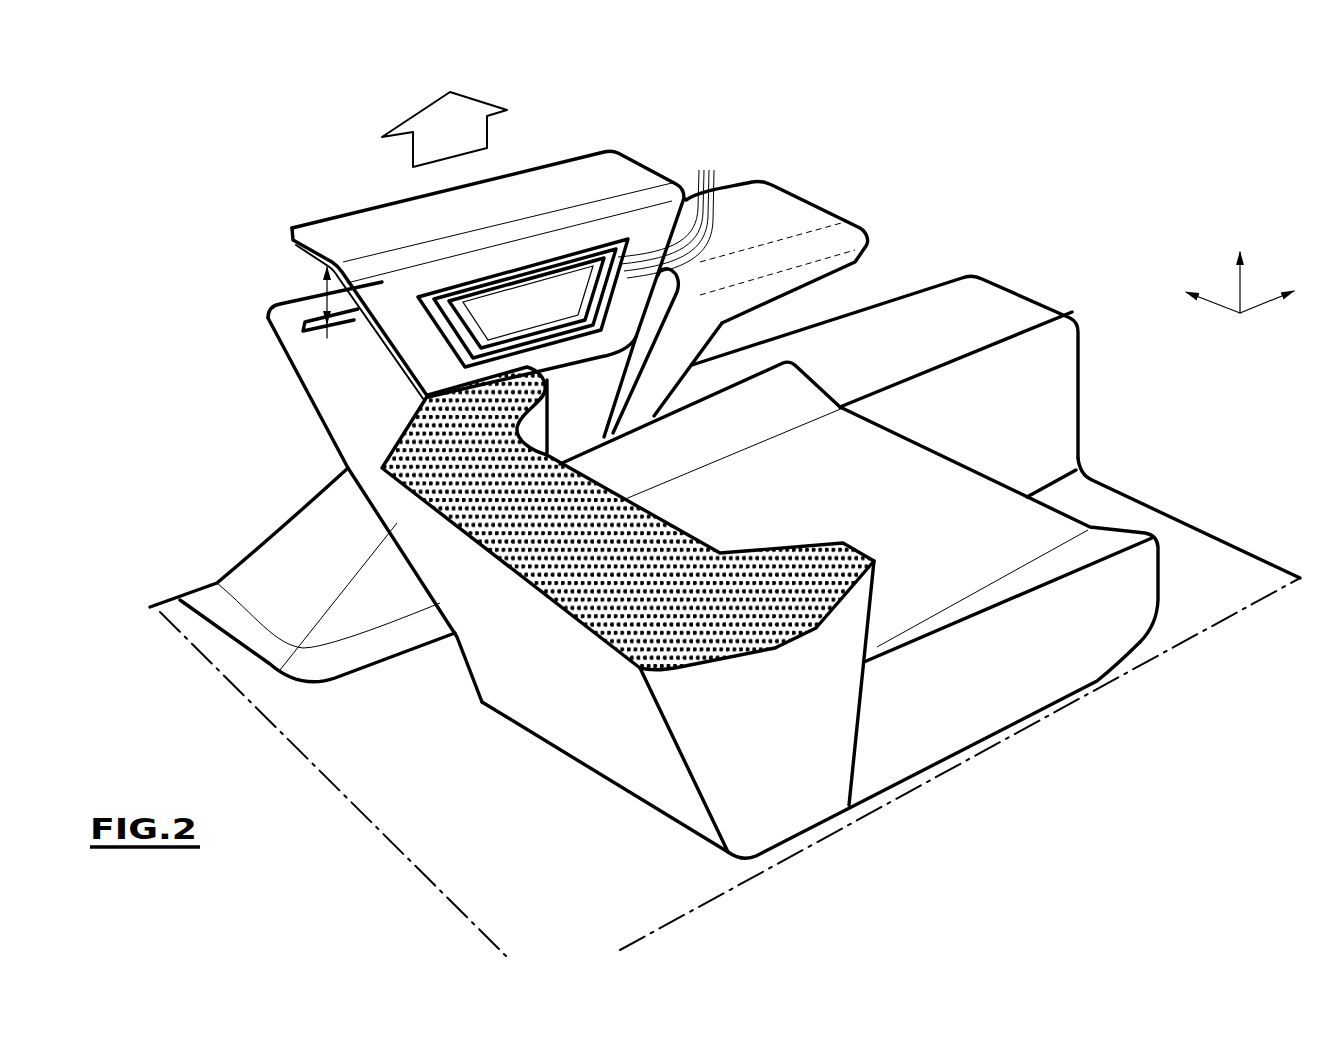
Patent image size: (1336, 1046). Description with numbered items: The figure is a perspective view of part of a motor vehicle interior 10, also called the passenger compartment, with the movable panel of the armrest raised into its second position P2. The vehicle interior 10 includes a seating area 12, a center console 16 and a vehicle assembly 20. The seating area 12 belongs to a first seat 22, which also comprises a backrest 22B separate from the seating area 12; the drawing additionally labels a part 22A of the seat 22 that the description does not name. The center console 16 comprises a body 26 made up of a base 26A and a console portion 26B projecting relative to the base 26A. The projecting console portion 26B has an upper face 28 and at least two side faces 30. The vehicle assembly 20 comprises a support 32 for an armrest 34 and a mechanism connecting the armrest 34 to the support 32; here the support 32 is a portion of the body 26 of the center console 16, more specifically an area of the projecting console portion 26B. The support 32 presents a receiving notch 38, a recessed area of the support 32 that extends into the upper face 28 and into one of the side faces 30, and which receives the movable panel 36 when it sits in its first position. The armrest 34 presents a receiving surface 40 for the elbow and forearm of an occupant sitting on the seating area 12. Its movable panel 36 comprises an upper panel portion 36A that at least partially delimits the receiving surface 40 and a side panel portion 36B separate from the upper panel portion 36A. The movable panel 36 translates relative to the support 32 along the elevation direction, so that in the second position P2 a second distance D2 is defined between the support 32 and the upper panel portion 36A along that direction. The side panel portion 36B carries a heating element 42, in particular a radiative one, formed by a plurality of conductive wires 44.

The vehicle interior 10 is at (845, 108).
The seating area 12 is at (1028, 538).
The center console 16 is at (993, 251).
The vehicle assembly 20 is at (653, 146).
The seat 22 is at (895, 822).
The first base portion 22A is at (1021, 650).
The backrest 22B is at (518, 638).
The body 26 is at (1001, 318).
The base 26A is at (902, 340).
The console portion 26B is at (789, 212).
The upper face 28 is at (297, 310).
The side faces 30 is at (687, 330).
The support 32 is at (407, 336).
The armrest 34 is at (582, 147).
The movable panel 36 is at (327, 232).
The upper panel portion 36A is at (371, 228).
The side panel portion 36B is at (365, 355).
The receiving notch 38 is at (368, 346).
The receiving surface 40 is at (510, 203).
The heating element 42 is at (570, 352).
The conductive wires 44 is at (667, 206).
The second distance D2 is at (310, 302).
The second position P2 is at (412, 129).